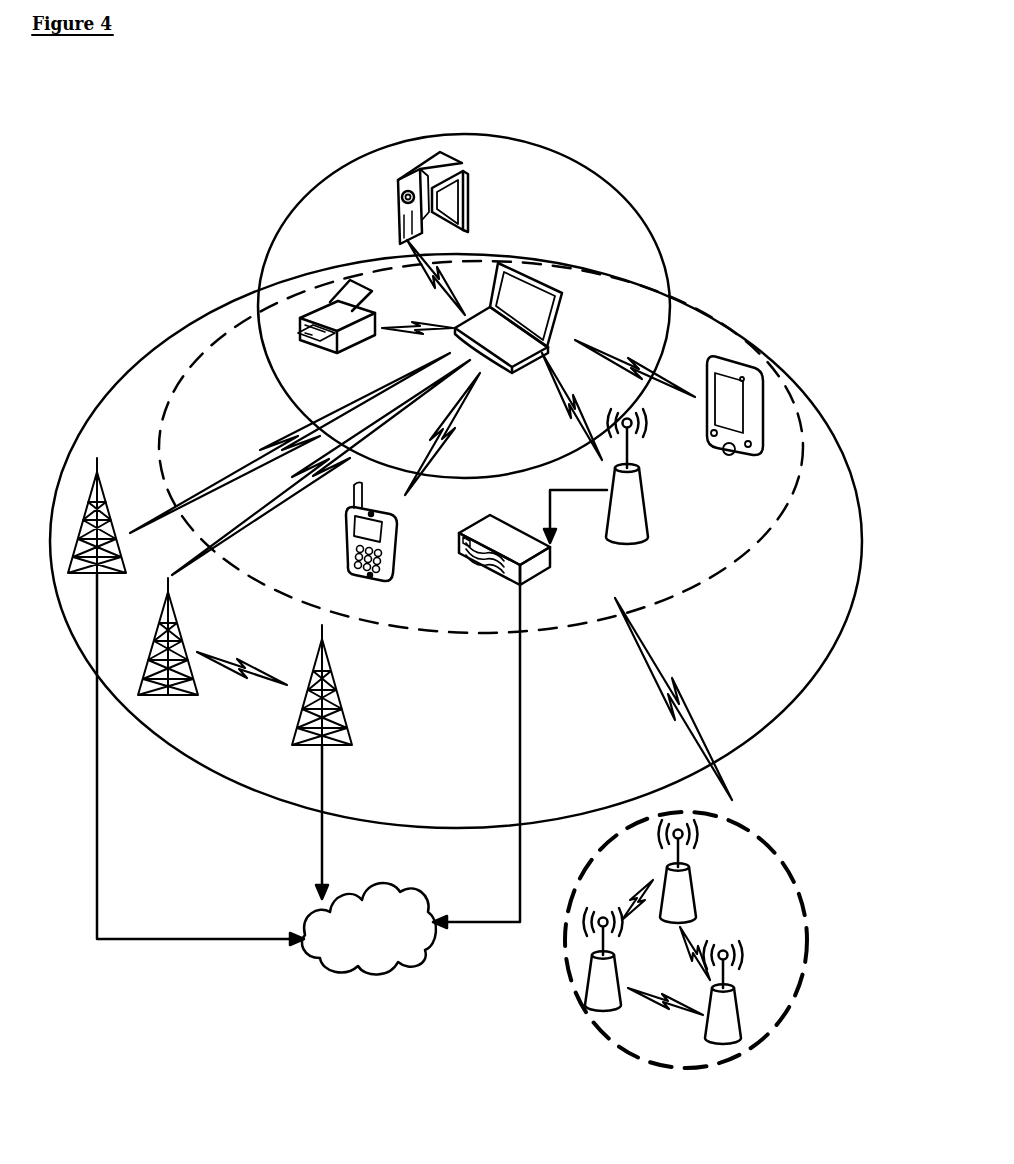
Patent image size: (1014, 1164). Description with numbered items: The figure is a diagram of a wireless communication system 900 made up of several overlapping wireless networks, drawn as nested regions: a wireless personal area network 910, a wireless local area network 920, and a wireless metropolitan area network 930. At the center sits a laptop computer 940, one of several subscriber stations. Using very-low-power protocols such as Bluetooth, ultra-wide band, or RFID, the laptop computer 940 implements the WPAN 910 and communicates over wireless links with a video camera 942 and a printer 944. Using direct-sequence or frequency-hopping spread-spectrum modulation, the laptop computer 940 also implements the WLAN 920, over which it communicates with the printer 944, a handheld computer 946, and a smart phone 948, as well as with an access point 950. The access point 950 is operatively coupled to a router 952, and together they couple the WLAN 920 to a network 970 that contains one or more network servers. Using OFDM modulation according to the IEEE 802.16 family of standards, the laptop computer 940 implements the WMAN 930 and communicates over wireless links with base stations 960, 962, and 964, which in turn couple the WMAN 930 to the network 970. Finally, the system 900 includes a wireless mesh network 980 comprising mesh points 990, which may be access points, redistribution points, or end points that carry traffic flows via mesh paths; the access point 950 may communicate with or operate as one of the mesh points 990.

The wireless communication system 900 is at (698, 170).
The wireless personal area network (WPAN) 910 is at (265, 285).
The wireless local area network (WLAN) 920 is at (200, 355).
The wireless metropolitan area network (WMAN) 930 is at (140, 362).
The laptop computer 940 is at (551, 268).
The video camera 942 is at (463, 205).
The printer 944 is at (376, 345).
The handheld computer 946 is at (742, 458).
The smart phone 948 is at (395, 582).
The access point (AP) 950 is at (643, 538).
The router 952 is at (532, 582).
The base station 960 is at (96, 490).
The base station 962 is at (184, 650).
The base station 964 is at (347, 722).
The network 970 is at (425, 898).
The wireless mesh network 980 is at (691, 927).
The mesh points (MPs) 990 is at (728, 917).